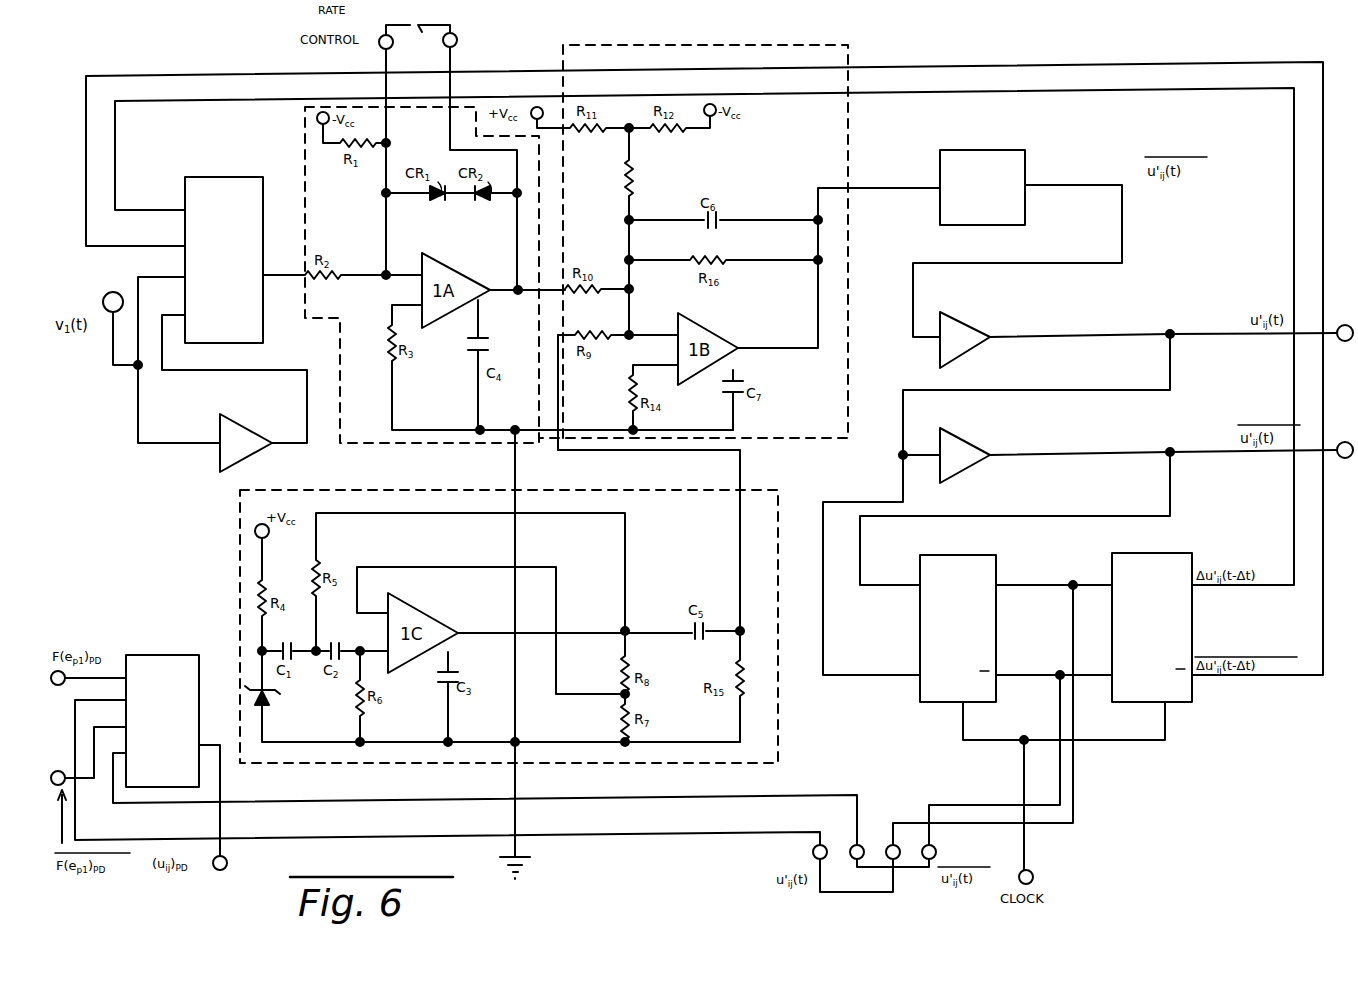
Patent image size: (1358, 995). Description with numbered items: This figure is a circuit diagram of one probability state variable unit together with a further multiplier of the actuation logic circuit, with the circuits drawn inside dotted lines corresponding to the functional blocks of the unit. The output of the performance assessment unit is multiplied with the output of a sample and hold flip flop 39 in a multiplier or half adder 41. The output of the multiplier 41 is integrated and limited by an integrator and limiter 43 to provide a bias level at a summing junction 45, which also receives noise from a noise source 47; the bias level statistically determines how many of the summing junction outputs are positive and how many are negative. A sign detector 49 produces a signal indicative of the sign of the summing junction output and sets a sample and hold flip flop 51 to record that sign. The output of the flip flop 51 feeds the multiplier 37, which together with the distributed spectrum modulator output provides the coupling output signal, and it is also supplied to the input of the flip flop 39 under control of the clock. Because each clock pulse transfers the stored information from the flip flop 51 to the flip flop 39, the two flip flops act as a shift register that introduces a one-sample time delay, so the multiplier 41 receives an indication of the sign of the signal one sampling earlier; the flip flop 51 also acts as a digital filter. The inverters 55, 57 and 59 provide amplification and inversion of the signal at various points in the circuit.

The multiplier 37 is at (193, 655).
The sample and hold flip flop 39 is at (1178, 563).
The multiplier (half adder) 41 is at (213, 177).
The integrator and limiter 43 is at (303, 125).
The summing junction 45 is at (850, 46).
The noise source 47 is at (780, 715).
The sign detector 49 is at (1025, 166).
The sample and hold flip flop 51 is at (996, 565).
The inverter 55 is at (250, 430).
The inverter 57 is at (985, 328).
The inverter 59 is at (985, 445).